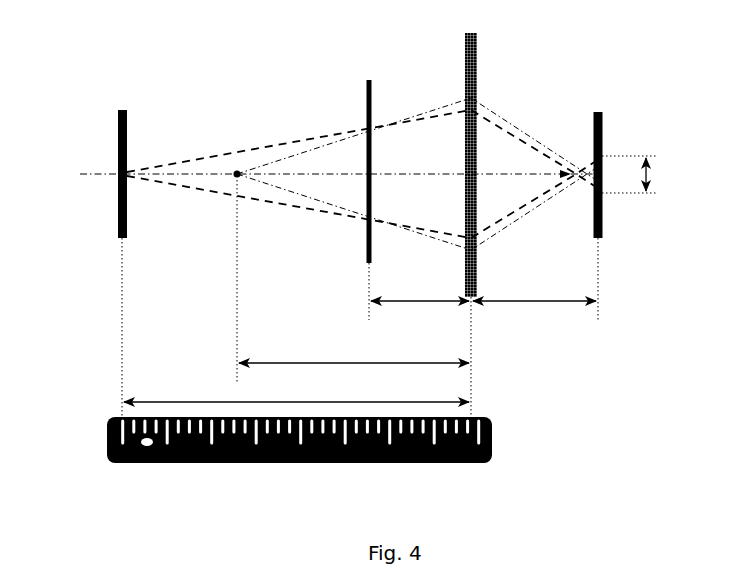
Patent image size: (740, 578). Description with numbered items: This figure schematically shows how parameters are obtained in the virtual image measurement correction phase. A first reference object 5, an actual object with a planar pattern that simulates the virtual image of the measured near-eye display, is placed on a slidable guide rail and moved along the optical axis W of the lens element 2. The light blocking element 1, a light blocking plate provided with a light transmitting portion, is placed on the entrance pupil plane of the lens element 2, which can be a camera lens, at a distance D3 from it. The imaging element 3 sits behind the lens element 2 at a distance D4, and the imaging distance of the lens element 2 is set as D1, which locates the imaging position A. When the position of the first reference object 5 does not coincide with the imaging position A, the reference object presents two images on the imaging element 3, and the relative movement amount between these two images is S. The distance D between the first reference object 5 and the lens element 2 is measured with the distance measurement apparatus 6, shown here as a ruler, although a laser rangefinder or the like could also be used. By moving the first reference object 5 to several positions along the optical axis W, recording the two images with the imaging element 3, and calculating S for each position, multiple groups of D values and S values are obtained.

The light blocking element 1 is at (371, 78).
The lens element 2 is at (480, 58).
The imaging element 3 is at (603, 110).
The first reference object 5 is at (113, 126).
The distance measurement apparatus 6 is at (104, 430).
The imaging position of the lens element A is at (234, 166).
The optical axis of the lens element W is at (81, 181).
The relative movement amount S is at (639, 174).
The distance between the first reference object and the lens element D is at (296, 390).
The imaging distance of the lens element D1 is at (354, 349).
The distance between the light blocking element and the lens element D3 is at (420, 286).
The distance between the lens element and the imaging element D4 is at (534, 286).